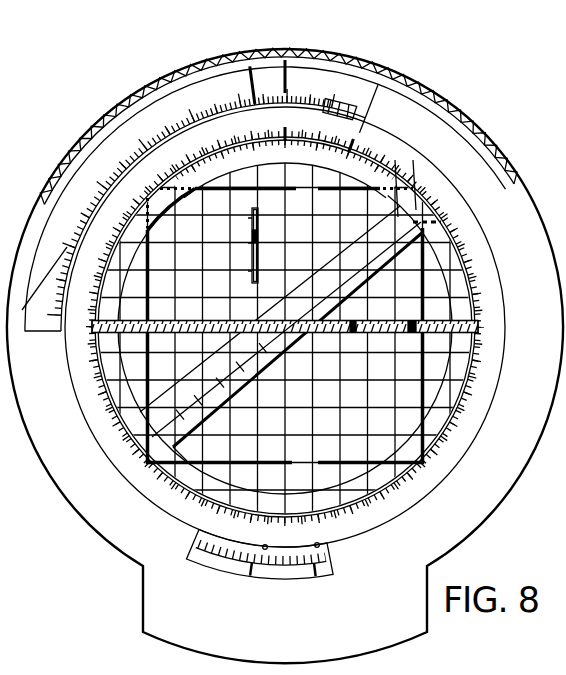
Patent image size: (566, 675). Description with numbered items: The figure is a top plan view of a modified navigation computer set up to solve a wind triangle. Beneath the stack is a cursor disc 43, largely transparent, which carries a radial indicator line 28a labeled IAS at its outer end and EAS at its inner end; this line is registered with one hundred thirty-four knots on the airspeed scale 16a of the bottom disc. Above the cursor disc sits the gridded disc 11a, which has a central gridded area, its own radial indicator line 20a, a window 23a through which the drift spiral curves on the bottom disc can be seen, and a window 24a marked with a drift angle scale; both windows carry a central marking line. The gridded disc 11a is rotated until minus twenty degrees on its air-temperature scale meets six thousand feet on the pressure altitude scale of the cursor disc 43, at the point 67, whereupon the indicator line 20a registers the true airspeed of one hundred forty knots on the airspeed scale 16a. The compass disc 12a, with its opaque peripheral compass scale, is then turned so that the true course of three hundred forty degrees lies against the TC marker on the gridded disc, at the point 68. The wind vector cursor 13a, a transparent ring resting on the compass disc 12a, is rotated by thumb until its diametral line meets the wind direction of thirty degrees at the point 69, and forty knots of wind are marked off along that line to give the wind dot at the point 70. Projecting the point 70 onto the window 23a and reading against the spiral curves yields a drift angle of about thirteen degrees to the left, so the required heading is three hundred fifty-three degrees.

The gridded disc 11a is at (99, 538).
The compass disc 12a is at (497, 306).
The wind vector cursor 13a is at (314, 327).
The airspeed scale 16a is at (22, 333).
The radial indicator line 20a is at (278, 183).
The window 23a is at (496, 345).
The window 24a is at (262, 233).
The radial indicator line 28a is at (213, 190).
The cursor disc 43 is at (496, 140).
The point 67 is at (238, 558).
The point 68 is at (372, 111).
The point 69 is at (447, 203).
The point 70 is at (199, 394).